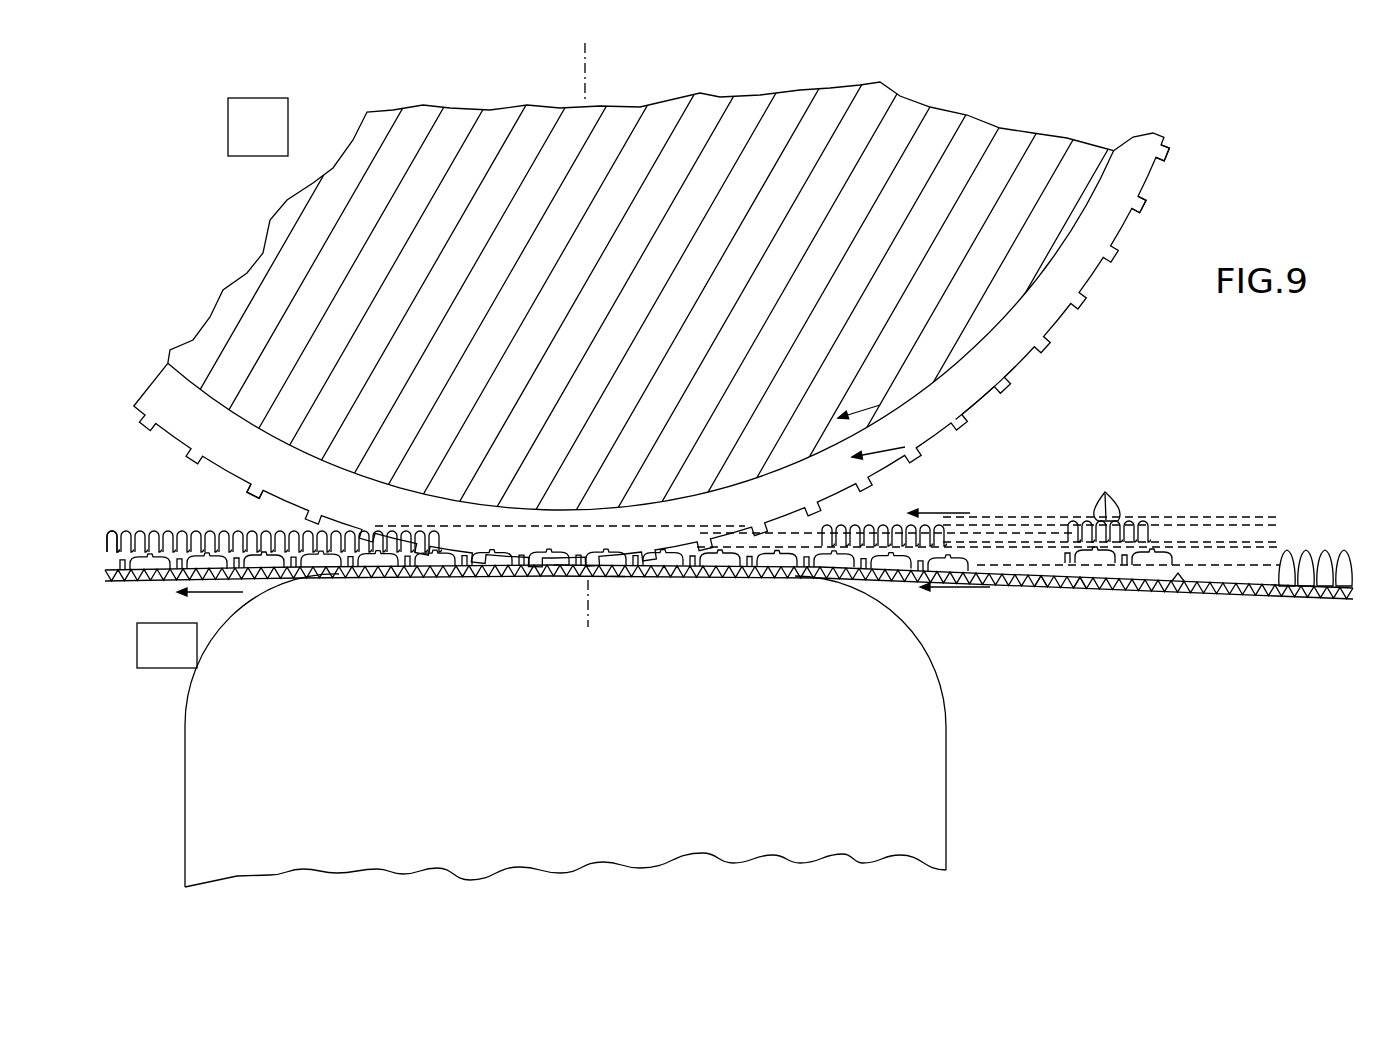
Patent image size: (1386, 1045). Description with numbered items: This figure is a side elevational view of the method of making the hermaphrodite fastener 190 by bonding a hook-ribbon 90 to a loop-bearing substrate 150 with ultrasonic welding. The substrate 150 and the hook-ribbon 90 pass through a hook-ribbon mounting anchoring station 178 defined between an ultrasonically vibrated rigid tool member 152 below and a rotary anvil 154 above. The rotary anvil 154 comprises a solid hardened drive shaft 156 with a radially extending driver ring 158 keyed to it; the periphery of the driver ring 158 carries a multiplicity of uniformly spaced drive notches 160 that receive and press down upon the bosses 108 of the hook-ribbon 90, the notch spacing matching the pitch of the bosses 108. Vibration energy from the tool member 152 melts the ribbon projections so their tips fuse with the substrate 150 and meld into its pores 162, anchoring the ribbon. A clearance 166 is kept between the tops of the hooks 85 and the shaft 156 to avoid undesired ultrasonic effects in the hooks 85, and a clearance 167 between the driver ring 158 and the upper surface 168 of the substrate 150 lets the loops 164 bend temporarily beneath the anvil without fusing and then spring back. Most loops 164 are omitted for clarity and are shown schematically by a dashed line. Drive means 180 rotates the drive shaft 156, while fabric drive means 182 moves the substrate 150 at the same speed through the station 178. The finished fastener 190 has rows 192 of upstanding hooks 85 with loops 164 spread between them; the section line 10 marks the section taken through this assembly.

The section line 10 is at (570, 57).
The hooks 85 is at (713, 520).
The hook-ribbon 90 is at (1122, 513).
The bosses 108 is at (530, 552).
The loop-bearing substrate 150 is at (1218, 593).
The ultrasonically vibrated rigid tool member 152 is at (600, 716).
The rotary anvil 154 is at (1086, 319).
The drive shaft 156 is at (1013, 287).
The driver rings 158 is at (977, 397).
The drive notches 160 is at (1140, 200).
The pores 162 is at (1078, 590).
The loops 164 is at (177, 527).
The clearance 166 is at (592, 517).
The clearance 167 is at (562, 566).
The upper surface 168 is at (1177, 582).
The hook-ribbon mounting anchoring station 178 is at (617, 580).
The drive means 180 is at (353, 130).
The fabric drive means 182 is at (169, 581).
The hermaphrodite fastener 190 is at (140, 512).
The rows 192 is at (110, 527).